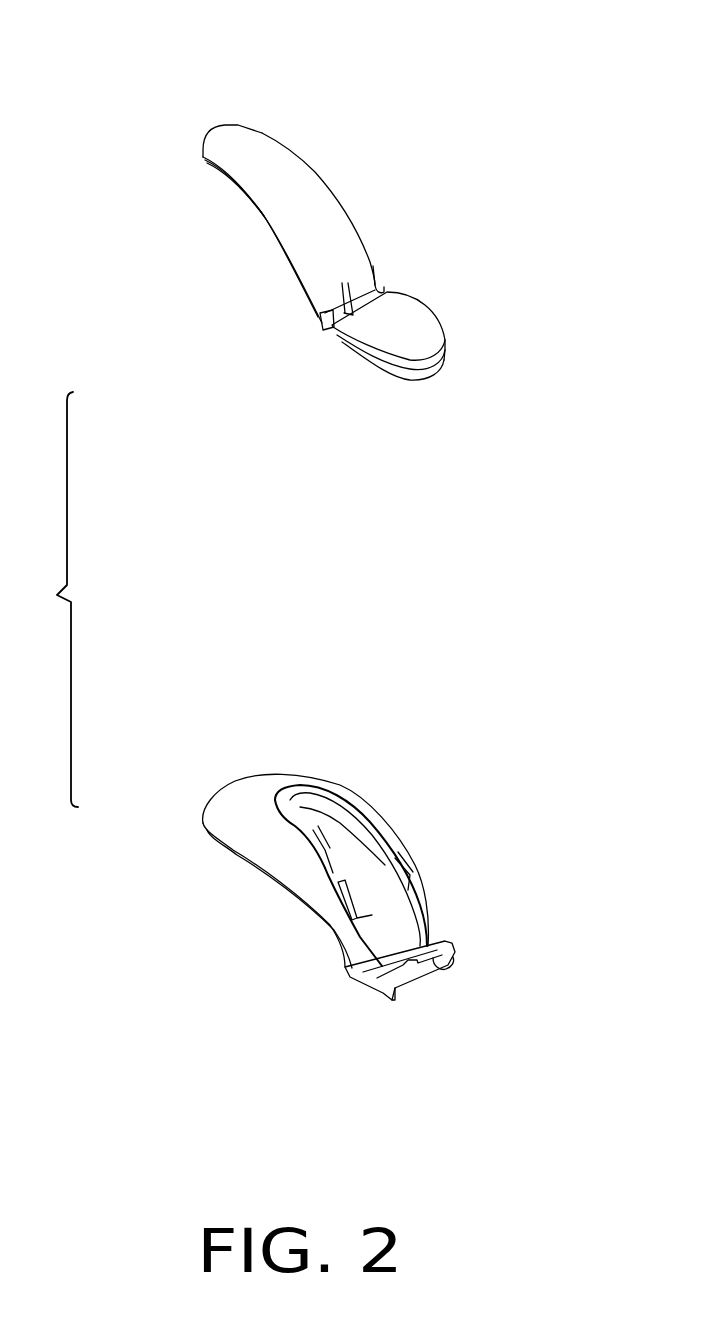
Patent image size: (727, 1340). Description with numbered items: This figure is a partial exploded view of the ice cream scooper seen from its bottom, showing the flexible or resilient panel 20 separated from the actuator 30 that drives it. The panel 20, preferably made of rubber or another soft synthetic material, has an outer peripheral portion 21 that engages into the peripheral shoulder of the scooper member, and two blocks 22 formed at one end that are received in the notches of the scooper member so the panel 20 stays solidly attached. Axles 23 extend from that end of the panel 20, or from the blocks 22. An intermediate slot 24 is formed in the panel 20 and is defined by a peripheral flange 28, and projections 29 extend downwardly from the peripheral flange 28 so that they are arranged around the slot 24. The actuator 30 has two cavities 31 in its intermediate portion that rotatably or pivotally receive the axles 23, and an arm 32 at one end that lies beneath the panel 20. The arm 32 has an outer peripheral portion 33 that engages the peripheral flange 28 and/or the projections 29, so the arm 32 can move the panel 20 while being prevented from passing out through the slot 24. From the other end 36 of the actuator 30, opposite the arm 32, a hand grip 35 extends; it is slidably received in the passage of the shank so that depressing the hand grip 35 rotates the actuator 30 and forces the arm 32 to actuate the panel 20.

The panel 20 is at (230, 803).
The outer peripheral portion 21 is at (205, 827).
The blocks 22 is at (447, 940).
The axles 23 is at (435, 973).
The slot 24 is at (372, 860).
The peripheral flange 28 is at (367, 932).
The projections 29 is at (323, 790).
The actuator 30 is at (303, 182).
The cavities 31 is at (383, 290).
The arm 32 is at (208, 162).
The outer peripheral portion 33 is at (258, 128).
The hand grip 35 is at (375, 367).
The other end 36 is at (449, 349).